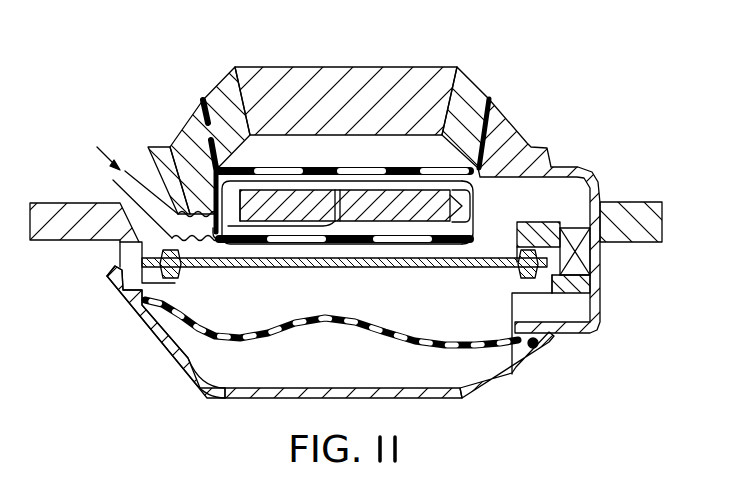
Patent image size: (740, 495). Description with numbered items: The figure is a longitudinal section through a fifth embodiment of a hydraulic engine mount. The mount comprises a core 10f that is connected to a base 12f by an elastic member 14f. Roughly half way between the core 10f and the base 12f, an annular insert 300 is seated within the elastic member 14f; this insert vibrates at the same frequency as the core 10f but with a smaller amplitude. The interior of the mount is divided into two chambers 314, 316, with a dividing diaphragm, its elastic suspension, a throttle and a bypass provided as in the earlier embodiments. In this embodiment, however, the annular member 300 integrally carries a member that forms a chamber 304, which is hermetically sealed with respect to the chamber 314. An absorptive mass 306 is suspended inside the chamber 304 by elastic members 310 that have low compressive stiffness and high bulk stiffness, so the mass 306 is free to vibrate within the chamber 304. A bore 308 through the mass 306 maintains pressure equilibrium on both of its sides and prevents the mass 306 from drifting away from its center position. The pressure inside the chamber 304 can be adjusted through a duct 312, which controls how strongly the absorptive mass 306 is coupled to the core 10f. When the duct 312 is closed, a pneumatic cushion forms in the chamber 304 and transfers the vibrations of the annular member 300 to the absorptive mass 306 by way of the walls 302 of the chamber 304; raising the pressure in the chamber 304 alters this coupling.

The core 10f is at (437, 77).
The base 12f is at (610, 210).
The elastic member 14f is at (508, 133).
The annular insert 300 is at (489, 100).
The walls 302 is at (471, 240).
The chamber 304 is at (437, 227).
The absorptive mass 306 is at (358, 203).
The bore 308 is at (335, 222).
The elastic members 310 is at (212, 170).
The duct 312 is at (133, 172).
The chamber 314 is at (375, 248).
The chamber 316 is at (436, 318).